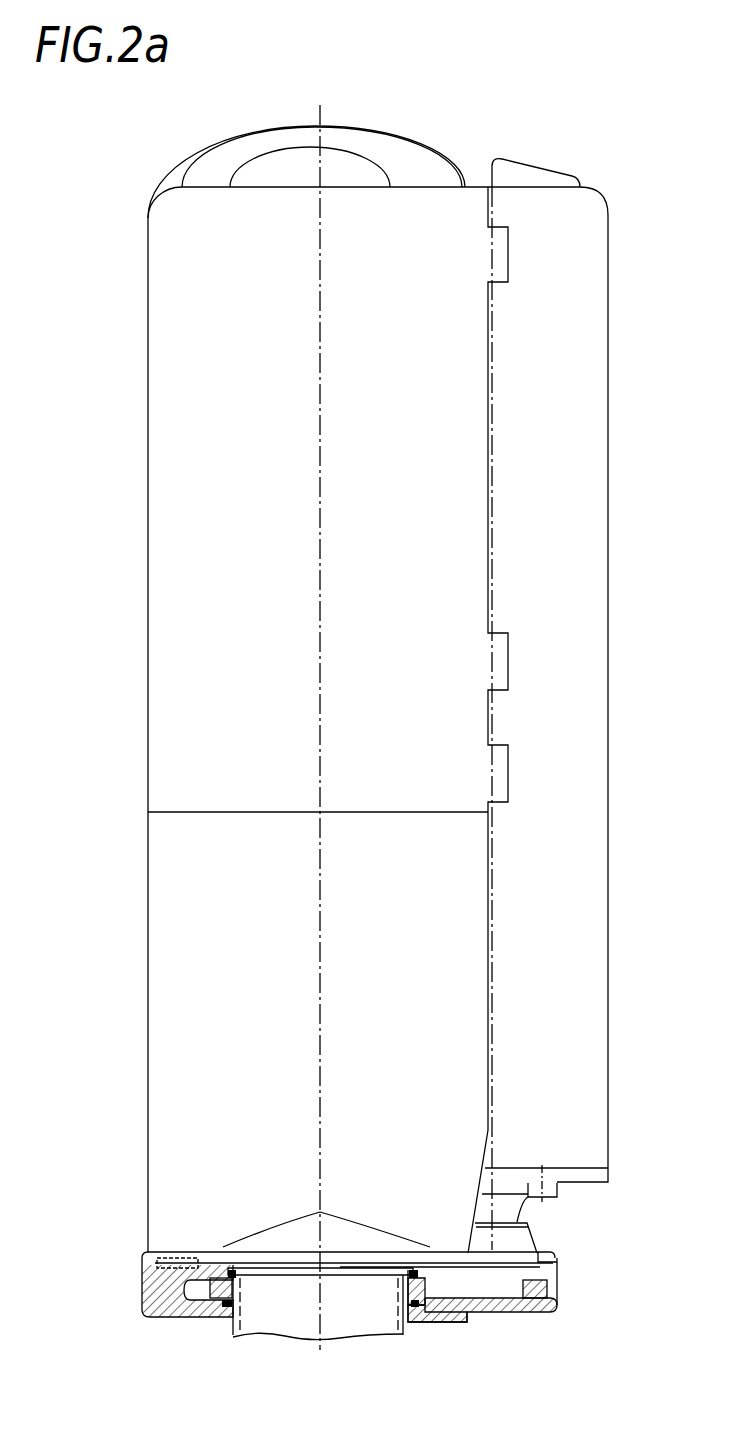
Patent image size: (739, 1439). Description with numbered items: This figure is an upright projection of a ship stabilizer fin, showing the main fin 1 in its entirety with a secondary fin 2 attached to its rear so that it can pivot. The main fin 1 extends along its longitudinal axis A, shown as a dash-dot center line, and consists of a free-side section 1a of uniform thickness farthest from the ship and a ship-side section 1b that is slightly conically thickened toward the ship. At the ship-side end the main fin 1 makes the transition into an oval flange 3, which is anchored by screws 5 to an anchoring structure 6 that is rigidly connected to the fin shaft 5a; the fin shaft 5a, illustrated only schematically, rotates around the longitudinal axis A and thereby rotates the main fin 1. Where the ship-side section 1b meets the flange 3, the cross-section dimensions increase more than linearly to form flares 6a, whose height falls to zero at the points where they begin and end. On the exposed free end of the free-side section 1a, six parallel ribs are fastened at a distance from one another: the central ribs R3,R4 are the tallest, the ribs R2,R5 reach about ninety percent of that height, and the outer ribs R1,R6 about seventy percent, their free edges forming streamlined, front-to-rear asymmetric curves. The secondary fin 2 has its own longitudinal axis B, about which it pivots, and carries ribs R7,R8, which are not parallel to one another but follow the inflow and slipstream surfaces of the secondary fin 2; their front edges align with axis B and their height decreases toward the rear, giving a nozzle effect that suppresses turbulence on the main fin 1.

The main fin 1 is at (143, 812).
The free-side section 1a is at (162, 483).
The ship-side section 1b is at (163, 1003).
The secondary fin 2 is at (595, 966).
The oval flange 3 is at (150, 1257).
The screws 5 is at (542, 1250).
The fin shaft 5a is at (262, 1325).
The anchoring structure 6 is at (150, 1300).
The flares 6a is at (282, 1228).
The longitudinal axis A is at (325, 912).
The longitudinal axis B is at (496, 912).
The ribs R1,R6 is at (332, 158).
The ribs R2,R5 is at (413, 155).
The ribs R3,R4 is at (167, 181).
The ribs R7,R8 is at (542, 175).